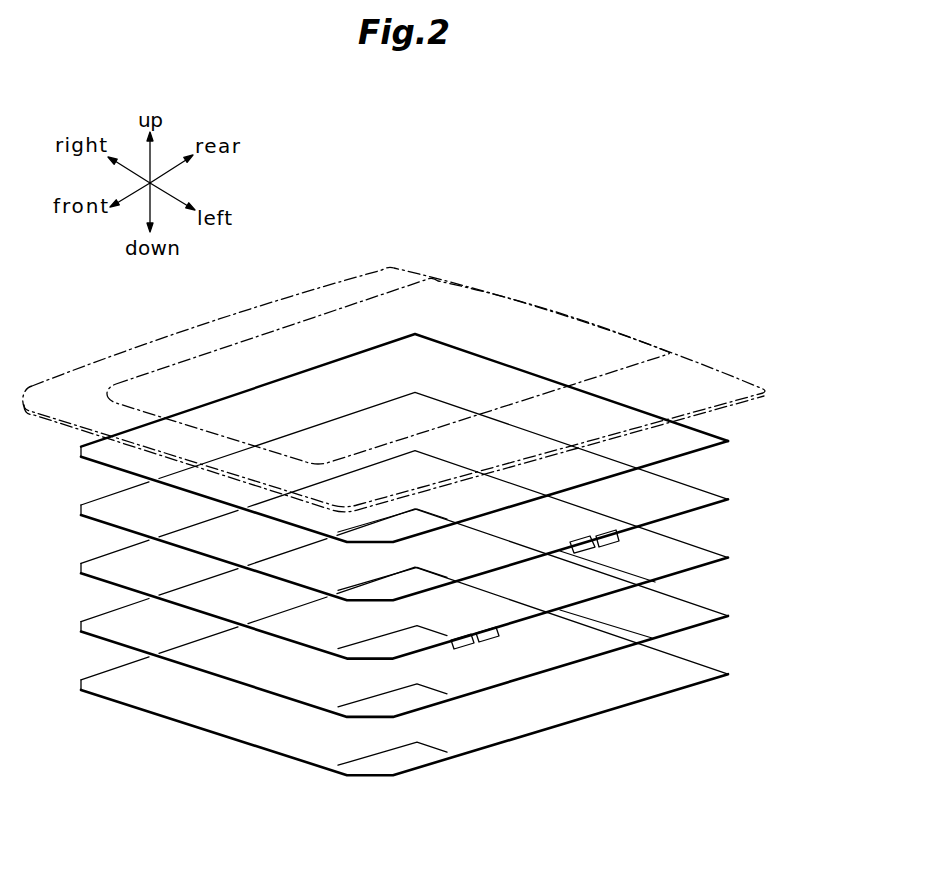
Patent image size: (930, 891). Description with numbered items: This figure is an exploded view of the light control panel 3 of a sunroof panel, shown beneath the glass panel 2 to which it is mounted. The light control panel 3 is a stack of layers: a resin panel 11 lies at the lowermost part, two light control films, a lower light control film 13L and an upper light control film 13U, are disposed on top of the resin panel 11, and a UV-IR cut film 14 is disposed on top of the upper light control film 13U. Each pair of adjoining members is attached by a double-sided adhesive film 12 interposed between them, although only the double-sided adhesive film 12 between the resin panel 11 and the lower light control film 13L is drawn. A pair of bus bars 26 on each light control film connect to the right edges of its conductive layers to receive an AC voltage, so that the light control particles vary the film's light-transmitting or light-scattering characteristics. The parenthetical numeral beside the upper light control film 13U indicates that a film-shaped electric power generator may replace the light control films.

The glass panel 2 is at (458, 285).
The light control panel 3 is at (770, 412).
The UV-IR cut film 14 is at (705, 450).
The upper light control film 13U is at (705, 508).
The lower light control film 13L is at (705, 566).
The double-sided adhesive film 12 is at (705, 625).
The resin panel 11 is at (613, 708).
The bus bars 26 is at (593, 552).